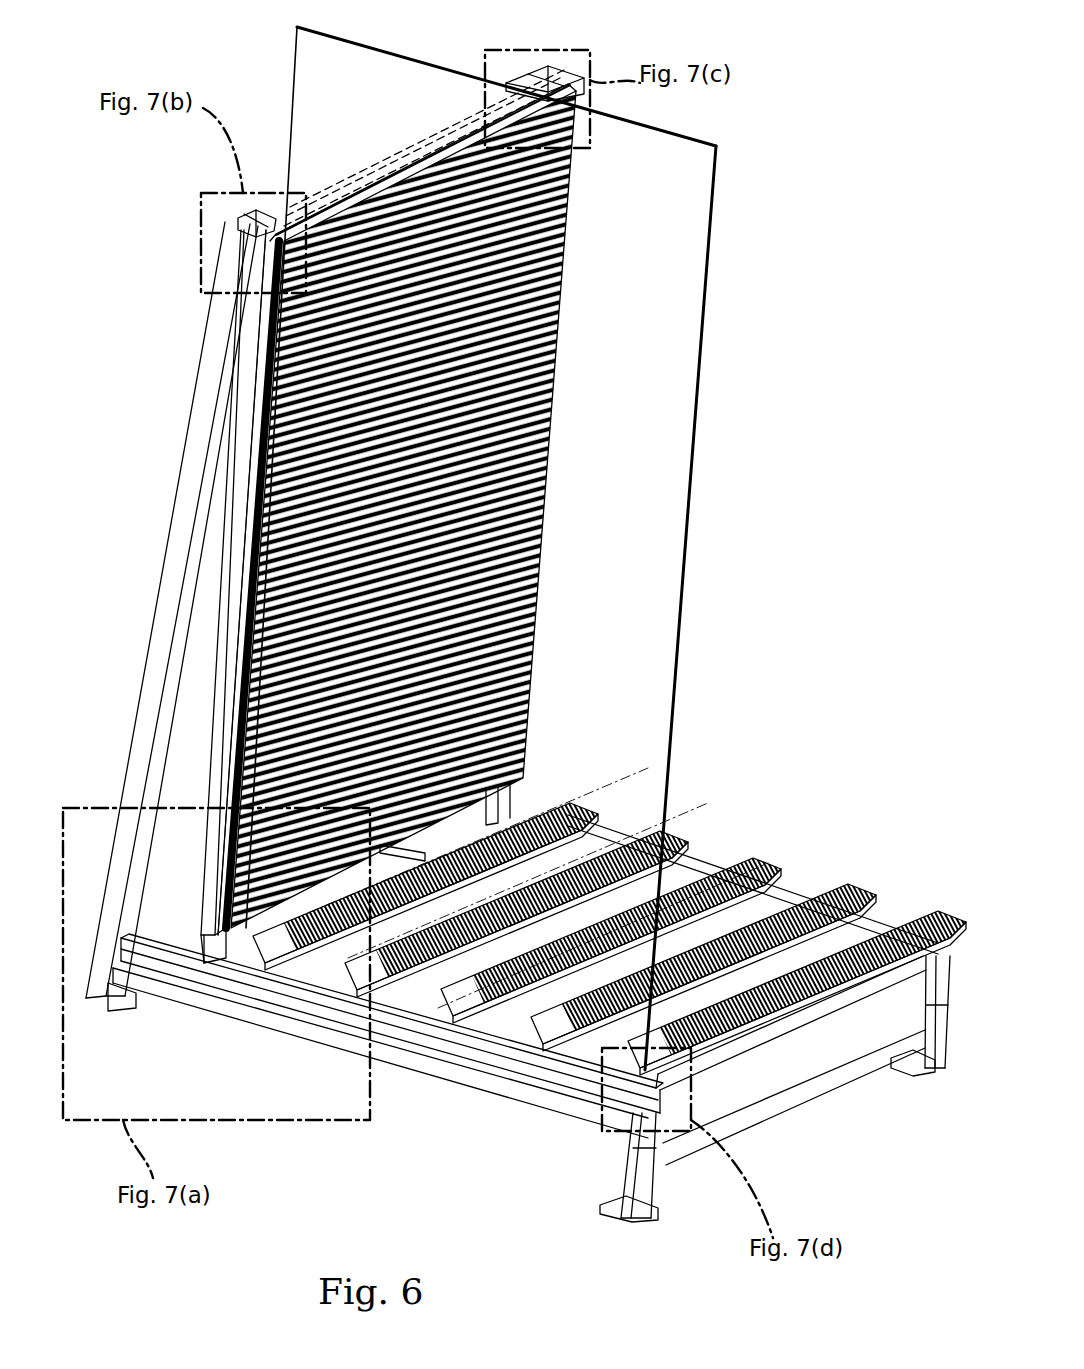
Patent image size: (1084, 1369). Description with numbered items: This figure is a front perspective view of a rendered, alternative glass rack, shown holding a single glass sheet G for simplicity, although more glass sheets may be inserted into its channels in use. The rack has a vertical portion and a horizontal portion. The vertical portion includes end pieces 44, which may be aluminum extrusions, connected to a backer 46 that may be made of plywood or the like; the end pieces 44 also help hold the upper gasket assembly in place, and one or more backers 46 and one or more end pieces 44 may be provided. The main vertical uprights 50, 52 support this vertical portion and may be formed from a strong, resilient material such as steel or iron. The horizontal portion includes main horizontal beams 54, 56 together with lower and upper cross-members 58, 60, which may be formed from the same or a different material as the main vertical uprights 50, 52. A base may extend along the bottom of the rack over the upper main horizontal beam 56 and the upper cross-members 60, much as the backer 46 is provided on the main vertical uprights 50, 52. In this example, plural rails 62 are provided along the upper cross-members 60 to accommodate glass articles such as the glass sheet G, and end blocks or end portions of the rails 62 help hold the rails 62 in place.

The glass sheet G is at (703, 253).
The end pieces 44 is at (227, 213).
The backer 46 is at (204, 822).
The main vertical upright 50 is at (186, 386).
The main vertical upright 52 is at (213, 580).
The main horizontal beam 54 is at (470, 1100).
The upper main horizontal beam 56 is at (585, 1076).
The lower cross-members 58 is at (455, 1060).
The upper cross-members 60 is at (658, 856).
The rails 62 is at (662, 826).